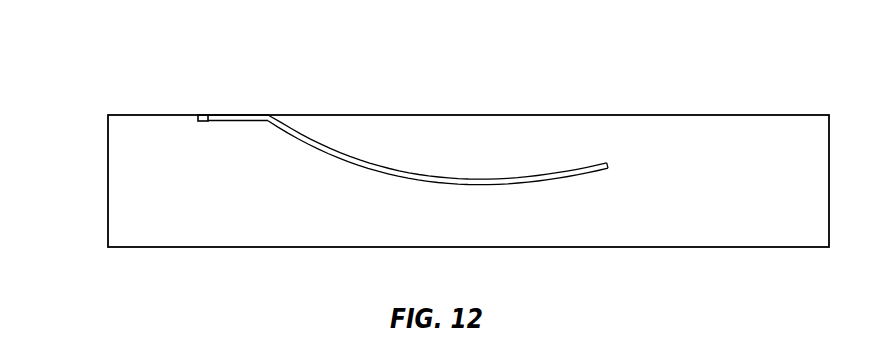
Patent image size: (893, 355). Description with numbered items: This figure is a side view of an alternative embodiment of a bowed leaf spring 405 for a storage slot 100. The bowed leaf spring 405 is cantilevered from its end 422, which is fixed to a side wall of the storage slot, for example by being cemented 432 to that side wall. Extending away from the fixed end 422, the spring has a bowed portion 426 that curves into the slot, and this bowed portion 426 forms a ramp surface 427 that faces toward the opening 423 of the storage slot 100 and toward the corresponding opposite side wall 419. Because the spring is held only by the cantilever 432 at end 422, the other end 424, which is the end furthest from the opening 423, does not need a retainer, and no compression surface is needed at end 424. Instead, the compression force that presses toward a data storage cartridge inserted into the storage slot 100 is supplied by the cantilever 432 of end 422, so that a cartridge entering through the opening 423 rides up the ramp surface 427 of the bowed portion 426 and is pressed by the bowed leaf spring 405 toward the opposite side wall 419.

The storage slot 100 is at (768, 68).
The opening 423 is at (108, 180).
The opposite side wall 419 is at (468, 246).
The cement 432 is at (204, 123).
The end 422 is at (244, 122).
The ramp surface 427 is at (338, 158).
The bowed portion 426 is at (421, 181).
The end 424 is at (610, 164).
The bowed leaf spring 405 is at (562, 180).